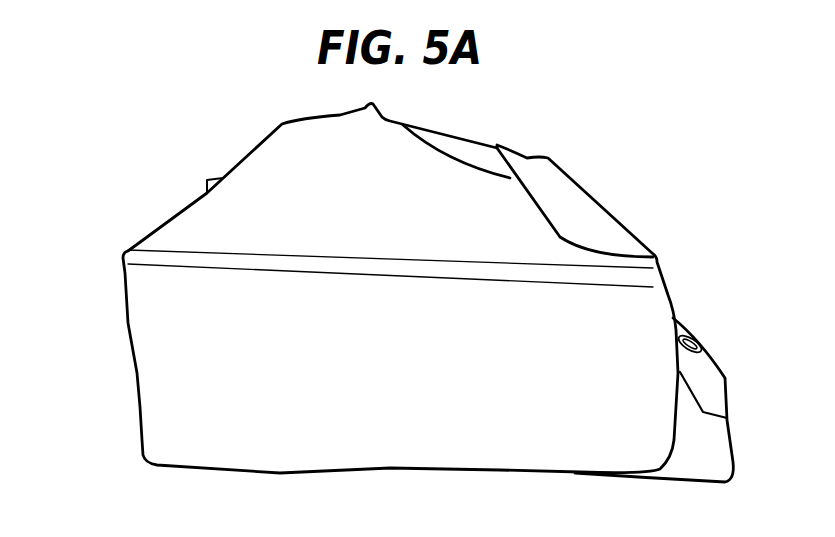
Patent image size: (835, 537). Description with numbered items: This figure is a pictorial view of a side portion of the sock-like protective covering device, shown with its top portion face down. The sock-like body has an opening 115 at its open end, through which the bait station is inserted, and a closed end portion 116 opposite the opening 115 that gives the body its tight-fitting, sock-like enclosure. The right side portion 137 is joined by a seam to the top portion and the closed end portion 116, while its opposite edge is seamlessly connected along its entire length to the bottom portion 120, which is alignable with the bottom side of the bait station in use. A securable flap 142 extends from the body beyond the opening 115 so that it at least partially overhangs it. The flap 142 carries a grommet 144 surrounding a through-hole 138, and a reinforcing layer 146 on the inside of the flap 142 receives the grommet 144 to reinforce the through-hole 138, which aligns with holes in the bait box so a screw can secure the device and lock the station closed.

The opening 115 is at (677, 254).
The closed end portion 116 is at (128, 324).
The bottom portion 120 is at (200, 232).
The right side portion 137 is at (227, 397).
The through-hole 138 is at (688, 339).
The securable flap 142 is at (717, 450).
The grommet 144 is at (703, 344).
The reinforcing layer 146 is at (708, 385).